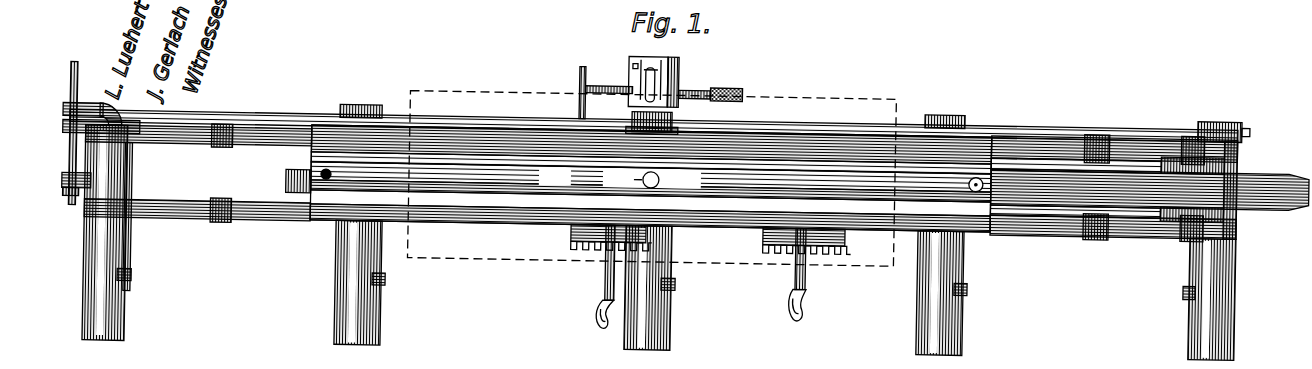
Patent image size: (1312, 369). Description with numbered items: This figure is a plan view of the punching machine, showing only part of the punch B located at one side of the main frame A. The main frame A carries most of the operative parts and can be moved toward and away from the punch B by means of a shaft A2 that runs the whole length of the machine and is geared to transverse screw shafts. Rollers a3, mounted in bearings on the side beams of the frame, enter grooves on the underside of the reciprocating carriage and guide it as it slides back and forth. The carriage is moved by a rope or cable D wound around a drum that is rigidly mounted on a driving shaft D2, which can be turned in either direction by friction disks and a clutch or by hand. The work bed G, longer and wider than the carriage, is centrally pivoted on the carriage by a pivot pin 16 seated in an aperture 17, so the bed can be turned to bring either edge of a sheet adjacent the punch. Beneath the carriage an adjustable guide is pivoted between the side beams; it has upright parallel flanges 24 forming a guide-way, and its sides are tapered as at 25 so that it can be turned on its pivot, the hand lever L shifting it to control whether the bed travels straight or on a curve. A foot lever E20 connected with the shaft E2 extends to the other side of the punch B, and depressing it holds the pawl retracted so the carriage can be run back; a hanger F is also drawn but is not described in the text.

The main frame A is at (197, 209).
The shaft A2 is at (460, 120).
The rollers a3 is at (133, 223).
The punch B is at (669, 52).
The rope or cable D is at (263, 121).
The driving shaft D2 is at (77, 196).
The shaft E2 is at (579, 70).
The foot lever E20 is at (703, 78).
The hanger hook F is at (606, 274).
The work bed G is at (650, 189).
The hand lever L is at (808, 268).
The pivot pin 16 is at (661, 170).
The aperture 17 is at (625, 180).
The flanges 24 is at (1078, 181).
The tapered sides 25 is at (1047, 152).